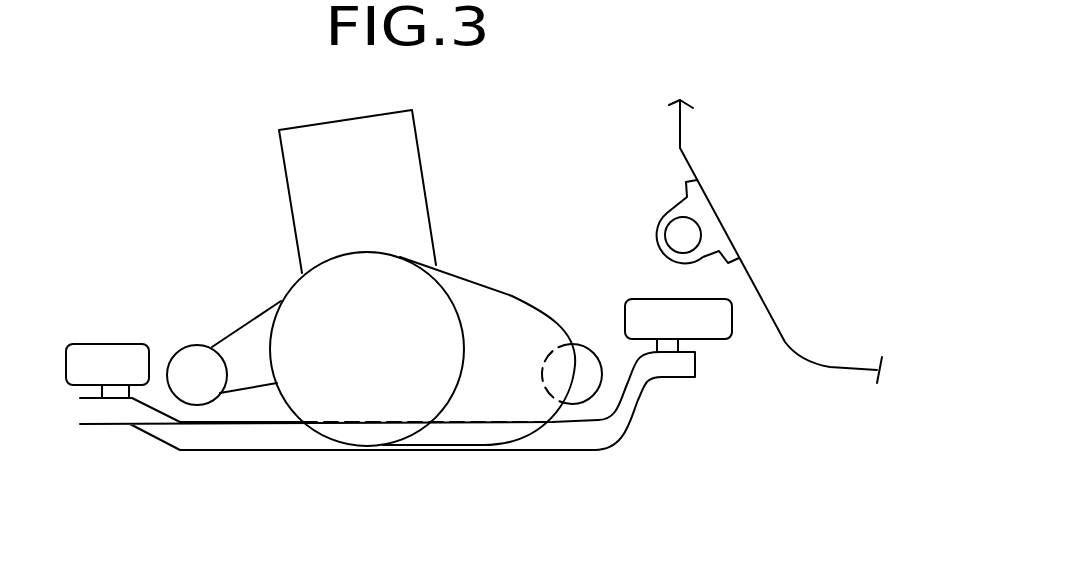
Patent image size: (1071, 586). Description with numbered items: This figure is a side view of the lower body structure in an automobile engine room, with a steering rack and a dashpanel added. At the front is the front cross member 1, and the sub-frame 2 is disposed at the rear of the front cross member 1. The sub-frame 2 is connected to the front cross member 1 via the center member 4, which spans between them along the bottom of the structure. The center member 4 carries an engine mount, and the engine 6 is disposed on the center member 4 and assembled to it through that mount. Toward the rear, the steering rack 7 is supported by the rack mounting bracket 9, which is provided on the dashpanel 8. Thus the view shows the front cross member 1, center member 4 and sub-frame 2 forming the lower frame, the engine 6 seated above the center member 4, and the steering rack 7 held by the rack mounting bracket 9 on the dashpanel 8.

The front cross member 1 is at (97, 365).
The sub-frame 2 is at (719, 319).
The center member 4 is at (600, 438).
The engine 6 is at (427, 200).
The steering rack 7 is at (687, 237).
The dashpanel 8 is at (784, 345).
The rack mounting bracket 9 is at (690, 190).